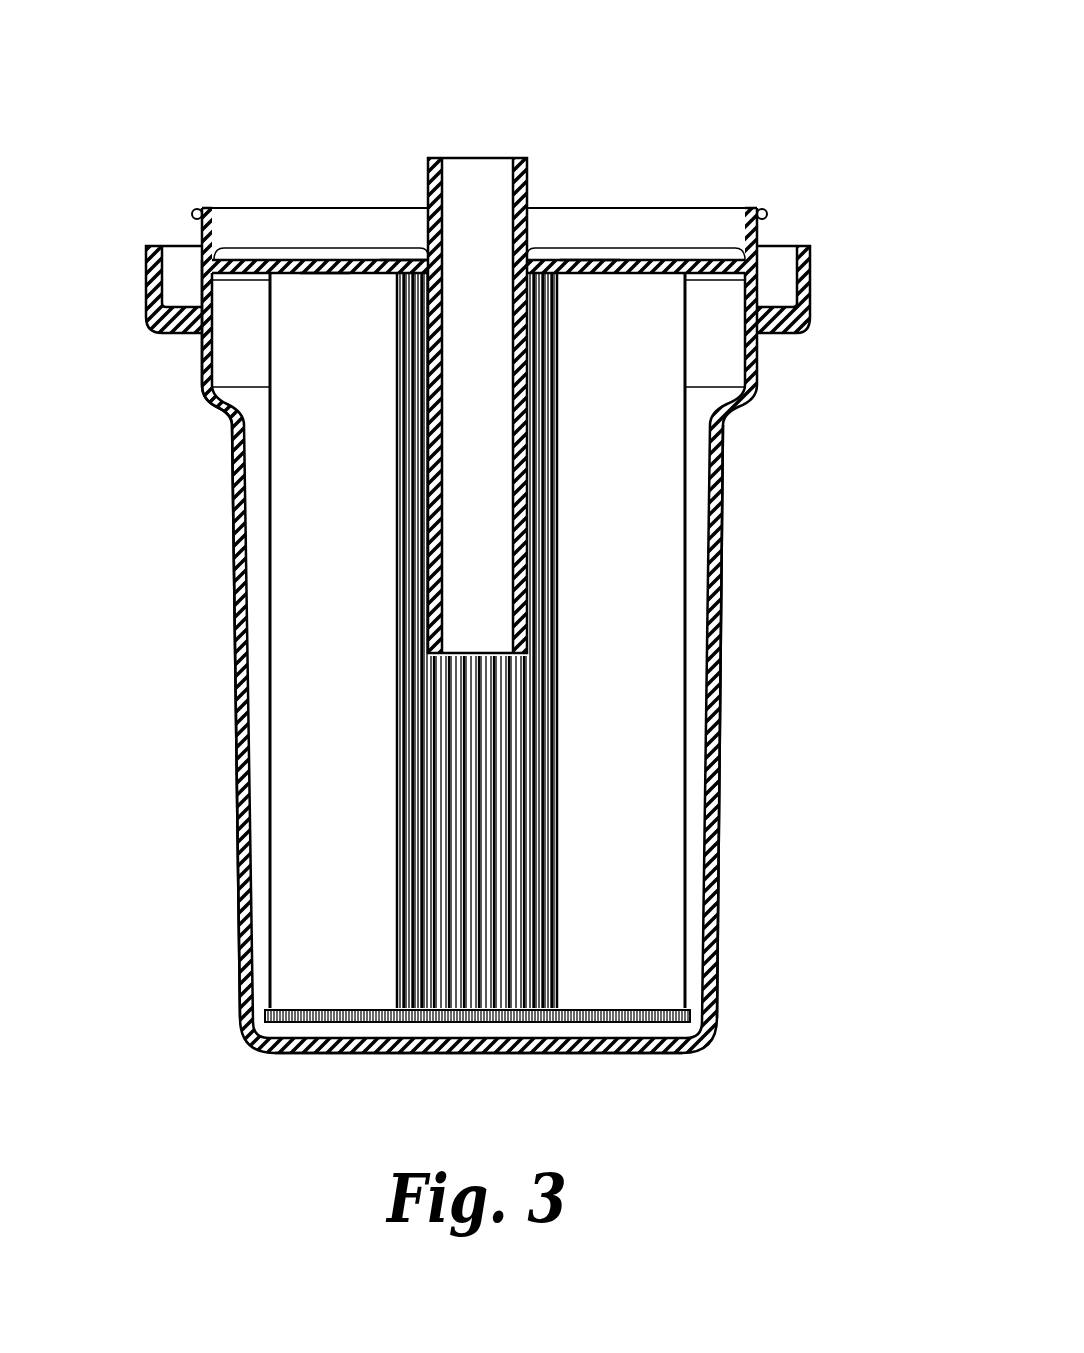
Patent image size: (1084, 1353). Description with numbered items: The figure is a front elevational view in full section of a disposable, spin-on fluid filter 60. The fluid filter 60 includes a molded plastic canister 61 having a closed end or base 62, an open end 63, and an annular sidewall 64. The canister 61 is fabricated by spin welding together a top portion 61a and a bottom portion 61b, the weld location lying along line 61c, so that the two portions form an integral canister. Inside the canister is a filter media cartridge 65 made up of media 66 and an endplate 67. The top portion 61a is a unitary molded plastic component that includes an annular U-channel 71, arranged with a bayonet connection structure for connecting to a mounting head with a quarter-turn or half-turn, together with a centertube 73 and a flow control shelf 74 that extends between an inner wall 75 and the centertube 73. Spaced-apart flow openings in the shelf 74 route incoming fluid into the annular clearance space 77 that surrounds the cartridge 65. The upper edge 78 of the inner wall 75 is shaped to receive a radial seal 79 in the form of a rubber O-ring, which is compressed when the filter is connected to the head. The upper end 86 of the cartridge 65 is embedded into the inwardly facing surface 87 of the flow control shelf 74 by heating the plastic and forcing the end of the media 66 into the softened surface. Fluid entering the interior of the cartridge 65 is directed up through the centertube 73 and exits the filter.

The fluid filter 60 is at (818, 143).
The canister 61 is at (466, 668).
The top portion 61a is at (200, 345).
The bottom portion 61b is at (232, 555).
The spin weld line 61c is at (225, 420).
The base 62 is at (577, 1045).
The open end 63 is at (530, 227).
The annular sidewall 64 is at (722, 578).
The filter media cartridge 65 is at (648, 865).
The media 66 is at (325, 770).
The endplate 67 is at (299, 1012).
The U-channel 71 is at (171, 274).
The centertube 73 is at (527, 490).
The flow control shelf 74 is at (400, 262).
The inner wall 75 is at (232, 268).
The annular clearance space 77 is at (715, 350).
The upper edge 78 is at (747, 210).
The radial seal 79 is at (768, 214).
The upper end 86 is at (325, 273).
The inwardly facing surface 87 is at (600, 262).